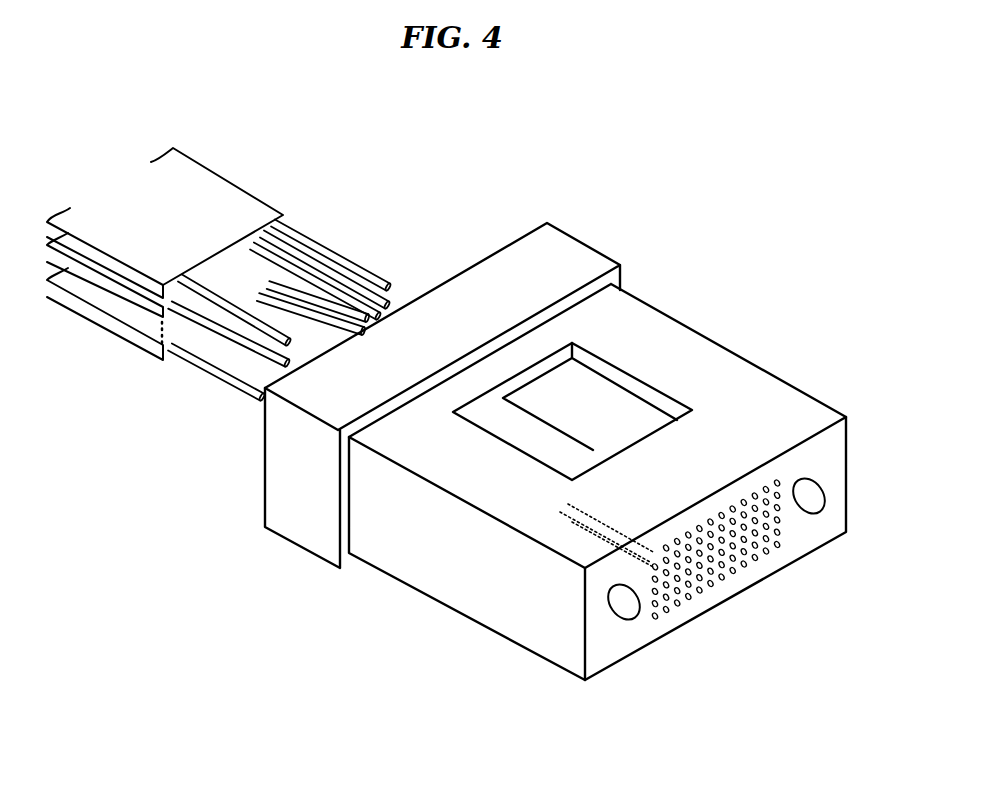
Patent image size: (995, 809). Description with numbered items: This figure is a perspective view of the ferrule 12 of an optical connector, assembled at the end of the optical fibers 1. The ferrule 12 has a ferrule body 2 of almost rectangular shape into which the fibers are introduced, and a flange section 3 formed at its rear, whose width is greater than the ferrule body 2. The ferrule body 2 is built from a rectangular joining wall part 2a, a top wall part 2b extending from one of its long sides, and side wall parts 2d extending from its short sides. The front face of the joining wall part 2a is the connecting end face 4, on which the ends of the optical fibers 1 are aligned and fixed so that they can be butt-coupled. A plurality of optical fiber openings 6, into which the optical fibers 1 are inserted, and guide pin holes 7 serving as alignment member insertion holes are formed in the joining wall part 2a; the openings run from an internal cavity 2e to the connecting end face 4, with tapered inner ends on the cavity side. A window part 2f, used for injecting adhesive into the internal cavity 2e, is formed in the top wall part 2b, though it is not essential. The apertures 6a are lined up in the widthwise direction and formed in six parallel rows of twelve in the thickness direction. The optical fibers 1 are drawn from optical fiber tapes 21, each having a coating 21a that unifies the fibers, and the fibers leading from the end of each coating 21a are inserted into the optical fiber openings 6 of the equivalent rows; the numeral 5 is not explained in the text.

The optical fibers 1 is at (340, 257).
The ferrule body 2 is at (583, 493).
The joining wall part 2a is at (840, 489).
The top wall part 2b is at (773, 397).
The side wall parts 2d is at (500, 608).
The internal cavity 2e is at (495, 420).
The window part 2f is at (595, 407).
The flange section 3 is at (302, 528).
The connecting end face 4 is at (739, 565).
The end face 5 is at (740, 588).
The optical fiber openings 6 is at (565, 512).
The apertures 6a is at (760, 490).
The guide pin holes 7 is at (810, 507).
The ferrule 12 is at (728, 343).
The optical fiber tapes 21 is at (183, 255).
The coating 21a is at (253, 193).